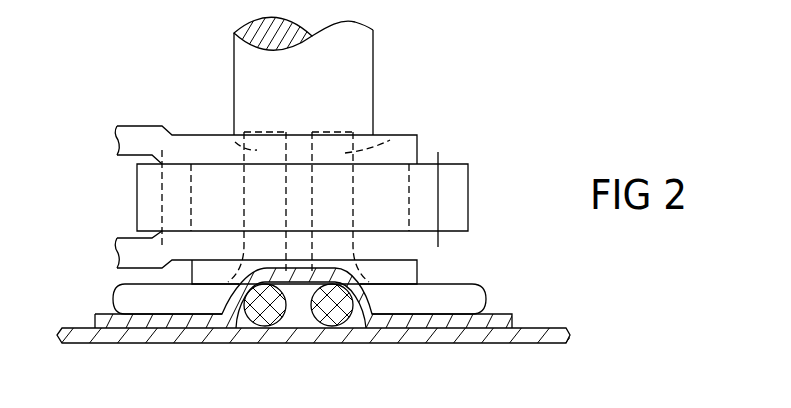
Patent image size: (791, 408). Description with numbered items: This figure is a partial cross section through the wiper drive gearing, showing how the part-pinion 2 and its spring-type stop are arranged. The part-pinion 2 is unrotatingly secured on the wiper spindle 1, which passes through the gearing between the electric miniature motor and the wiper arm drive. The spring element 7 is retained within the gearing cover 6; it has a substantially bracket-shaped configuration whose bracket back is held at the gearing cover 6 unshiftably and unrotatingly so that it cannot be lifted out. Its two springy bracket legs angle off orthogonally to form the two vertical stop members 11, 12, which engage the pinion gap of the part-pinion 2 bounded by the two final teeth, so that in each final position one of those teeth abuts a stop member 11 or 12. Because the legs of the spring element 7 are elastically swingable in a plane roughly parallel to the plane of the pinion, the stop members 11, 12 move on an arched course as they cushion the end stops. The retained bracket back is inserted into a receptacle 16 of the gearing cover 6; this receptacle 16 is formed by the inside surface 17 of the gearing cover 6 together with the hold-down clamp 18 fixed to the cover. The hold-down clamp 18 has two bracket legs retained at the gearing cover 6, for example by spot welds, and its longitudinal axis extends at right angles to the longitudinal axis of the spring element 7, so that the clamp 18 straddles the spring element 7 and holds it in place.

The wiper spindle 1 is at (360, 58).
The part-pinion 2 is at (461, 186).
The gearing cover 6 is at (537, 343).
The spring element 7 is at (468, 283).
The stop member 11 is at (225, 132).
The stop member 12 is at (390, 140).
The receptacle 16 is at (288, 333).
The inside surface 17 is at (304, 326).
The hold-down clamp 18 is at (496, 314).